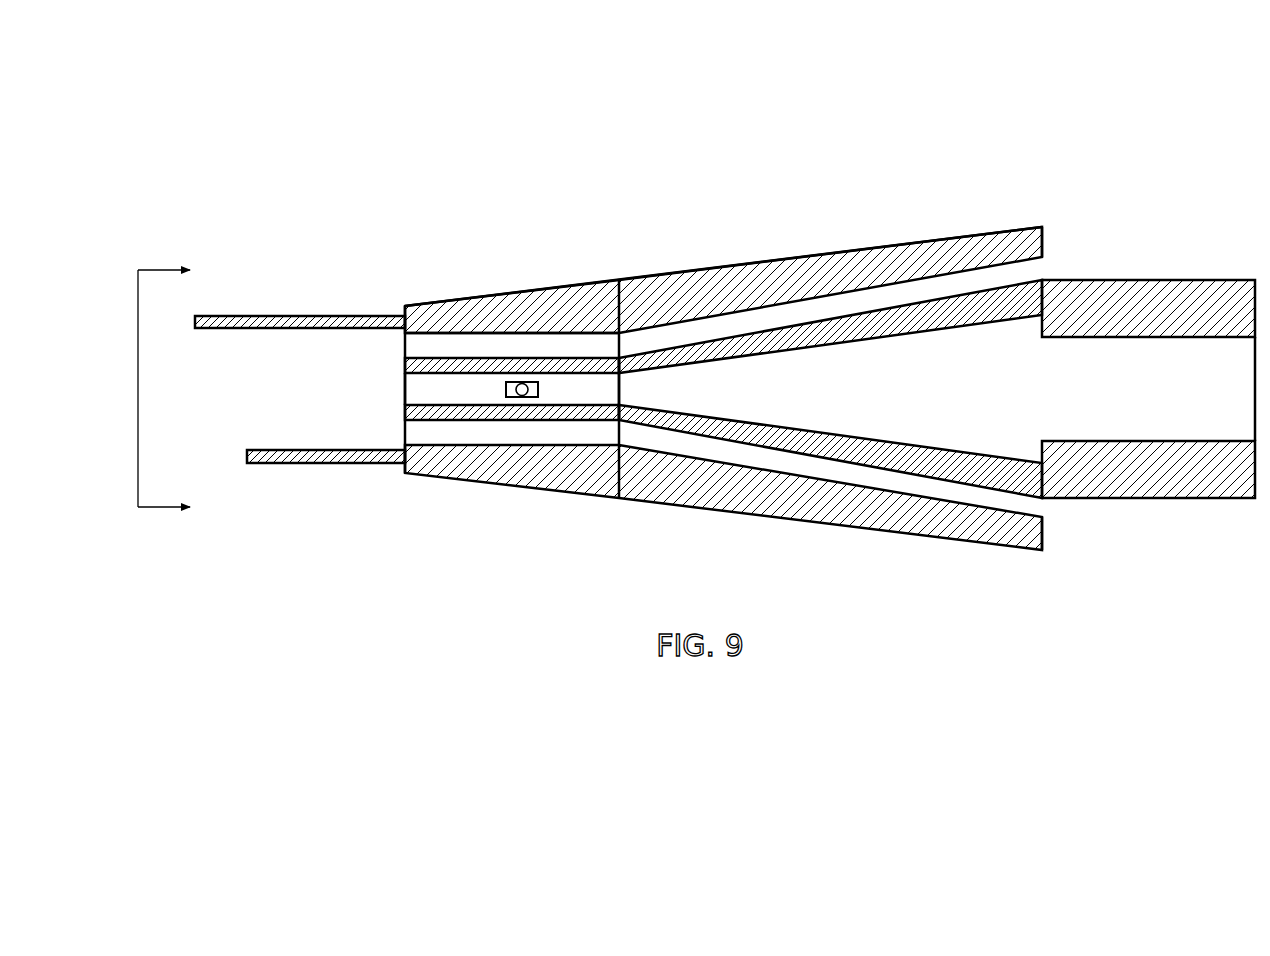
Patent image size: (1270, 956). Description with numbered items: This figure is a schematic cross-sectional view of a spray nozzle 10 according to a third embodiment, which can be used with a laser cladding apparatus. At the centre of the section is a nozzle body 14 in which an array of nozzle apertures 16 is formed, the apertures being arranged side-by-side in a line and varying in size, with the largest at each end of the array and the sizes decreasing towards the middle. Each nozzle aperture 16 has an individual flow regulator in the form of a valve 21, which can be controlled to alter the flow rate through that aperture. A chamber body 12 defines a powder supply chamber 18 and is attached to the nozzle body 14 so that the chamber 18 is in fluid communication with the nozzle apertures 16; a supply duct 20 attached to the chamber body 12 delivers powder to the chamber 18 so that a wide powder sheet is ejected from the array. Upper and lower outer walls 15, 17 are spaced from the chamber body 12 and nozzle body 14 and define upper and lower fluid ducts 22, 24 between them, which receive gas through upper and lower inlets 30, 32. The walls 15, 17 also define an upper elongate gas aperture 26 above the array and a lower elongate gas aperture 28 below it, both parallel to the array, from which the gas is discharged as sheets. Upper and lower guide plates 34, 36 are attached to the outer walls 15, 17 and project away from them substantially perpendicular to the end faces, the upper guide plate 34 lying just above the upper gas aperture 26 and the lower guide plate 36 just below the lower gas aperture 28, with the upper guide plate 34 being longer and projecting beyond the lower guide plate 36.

The spray nozzle 10 is at (1174, 116).
The chamber body 12 is at (798, 322).
The nozzle body 14 is at (553, 358).
The upper outer wall 15 is at (683, 273).
The nozzle apertures 16 is at (438, 389).
The lower outer wall 17 is at (688, 512).
The powder supply chamber 18 is at (938, 390).
The supply duct 20 is at (1240, 303).
The valve 21 is at (538, 397).
The upper fluid duct 22 is at (872, 300).
The lower fluid duct 24 is at (842, 472).
The upper elongate gas aperture 26 is at (432, 345).
The lower elongate gas aperture 28 is at (482, 430).
The upper inlet 30 is at (1044, 264).
The lower inlet 32 is at (1042, 507).
The upper guide plate 34 is at (275, 315).
The lower guide plate 36 is at (290, 465).